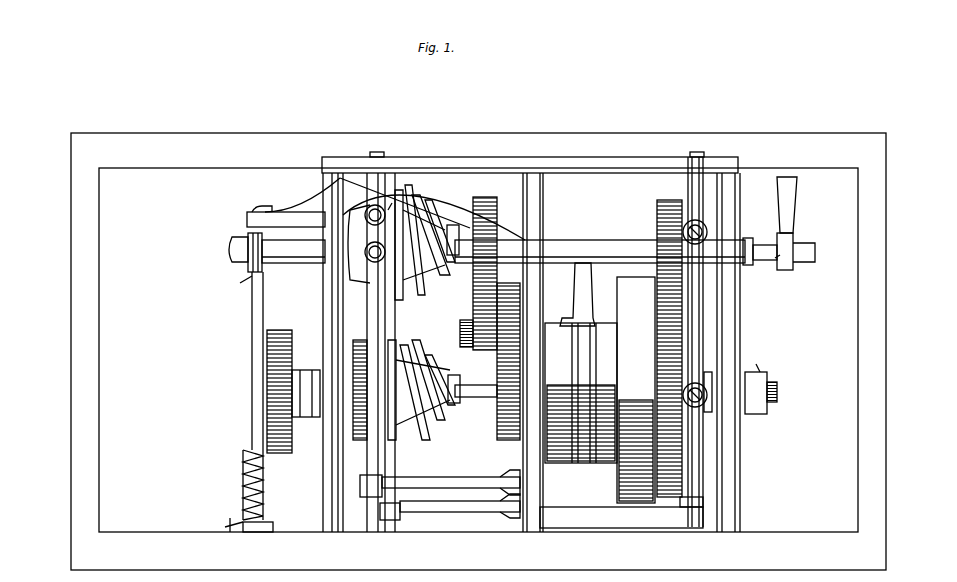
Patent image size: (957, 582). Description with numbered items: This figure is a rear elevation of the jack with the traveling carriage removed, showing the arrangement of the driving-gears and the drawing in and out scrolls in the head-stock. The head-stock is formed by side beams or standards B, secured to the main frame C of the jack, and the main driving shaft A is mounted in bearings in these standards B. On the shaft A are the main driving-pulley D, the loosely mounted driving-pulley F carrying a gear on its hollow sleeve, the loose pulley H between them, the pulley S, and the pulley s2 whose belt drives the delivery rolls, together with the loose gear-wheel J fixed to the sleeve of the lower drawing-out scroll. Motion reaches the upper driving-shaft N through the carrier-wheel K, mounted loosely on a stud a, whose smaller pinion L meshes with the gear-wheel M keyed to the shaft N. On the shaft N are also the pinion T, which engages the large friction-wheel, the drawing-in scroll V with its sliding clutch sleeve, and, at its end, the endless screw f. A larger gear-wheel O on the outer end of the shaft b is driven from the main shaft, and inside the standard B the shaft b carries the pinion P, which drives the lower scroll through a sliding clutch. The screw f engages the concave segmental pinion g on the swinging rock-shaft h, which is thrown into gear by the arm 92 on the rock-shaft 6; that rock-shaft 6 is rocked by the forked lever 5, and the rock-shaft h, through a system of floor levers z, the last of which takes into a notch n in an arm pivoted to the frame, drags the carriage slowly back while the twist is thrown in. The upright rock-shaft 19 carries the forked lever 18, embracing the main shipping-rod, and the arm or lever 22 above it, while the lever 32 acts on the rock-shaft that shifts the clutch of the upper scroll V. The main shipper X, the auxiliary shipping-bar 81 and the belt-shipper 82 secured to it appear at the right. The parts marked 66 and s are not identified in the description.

The main frame C is at (478, 351).
The side beams or standards B is at (531, 342).
The gear-wheel J is at (374, 352).
The upright rock-shaft 19 is at (703, 342).
The arm or lever 22 is at (701, 308).
The upper driving-shaft N is at (293, 251).
The concave segmental pinion g is at (239, 252).
The collar s' s is at (237, 284).
The arm 92 is at (293, 202).
The swinging rock-shaft h is at (250, 361).
The lever z is at (270, 522).
The gear-wheel O is at (279, 385).
The shaft b is at (306, 386).
The pinion P is at (356, 385).
The rock-shaft 6 is at (369, 274).
The clutch member 66 is at (401, 199).
The drawing-in scroll V is at (427, 254).
The notch n is at (432, 209).
The stud a is at (438, 383).
The gear-wheel M is at (485, 264).
The carrier-wheel K is at (508, 361).
The pinion L is at (466, 339).
The main or driving shaft A is at (622, 393).
The endless screw f is at (600, 240).
The main shipper X is at (796, 223).
The auxiliary shipping-bar 81 is at (770, 262).
The pulley s2 is at (753, 361).
The pinion T is at (669, 340).
The belt-shipper 82 is at (577, 294).
The loose pulley H is at (581, 393).
The driving-pulley F is at (577, 393).
The main driving-pulley D is at (599, 393).
The pulley S is at (636, 390).
The lever 32 is at (440, 481).
The lever 5 is at (450, 507).
The lever 18 is at (621, 509).